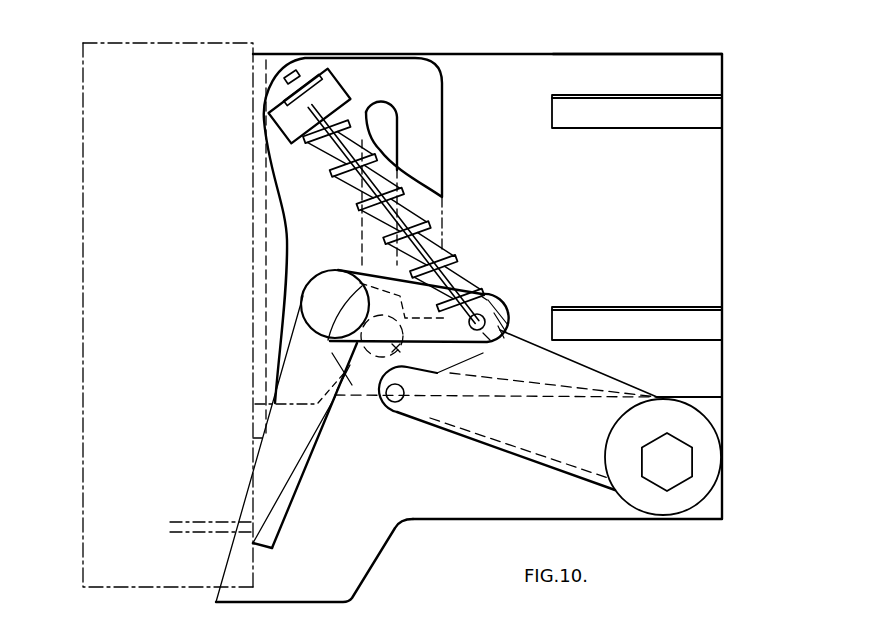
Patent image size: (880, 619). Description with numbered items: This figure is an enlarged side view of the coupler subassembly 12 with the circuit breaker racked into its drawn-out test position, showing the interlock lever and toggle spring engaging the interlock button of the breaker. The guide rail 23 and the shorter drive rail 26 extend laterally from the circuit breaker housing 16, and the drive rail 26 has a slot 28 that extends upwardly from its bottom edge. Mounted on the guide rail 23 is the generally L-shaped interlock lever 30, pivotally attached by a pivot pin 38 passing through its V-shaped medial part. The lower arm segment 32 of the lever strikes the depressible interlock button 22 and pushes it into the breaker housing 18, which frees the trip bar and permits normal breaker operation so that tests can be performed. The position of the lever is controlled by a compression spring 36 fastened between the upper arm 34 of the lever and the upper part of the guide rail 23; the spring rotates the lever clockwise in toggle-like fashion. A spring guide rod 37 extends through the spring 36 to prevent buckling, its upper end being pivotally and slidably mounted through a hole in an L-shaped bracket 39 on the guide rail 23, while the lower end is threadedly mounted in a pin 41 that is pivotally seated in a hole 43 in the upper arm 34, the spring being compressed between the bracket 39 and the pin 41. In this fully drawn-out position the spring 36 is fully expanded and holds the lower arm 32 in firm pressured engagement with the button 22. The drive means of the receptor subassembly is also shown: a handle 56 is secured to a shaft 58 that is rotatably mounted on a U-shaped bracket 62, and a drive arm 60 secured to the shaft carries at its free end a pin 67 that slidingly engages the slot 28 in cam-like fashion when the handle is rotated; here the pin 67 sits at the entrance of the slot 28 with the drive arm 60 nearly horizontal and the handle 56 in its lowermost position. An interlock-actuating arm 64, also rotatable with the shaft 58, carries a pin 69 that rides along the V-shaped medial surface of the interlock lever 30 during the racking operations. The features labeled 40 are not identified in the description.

The coupler subassembly 12 is at (500, 52).
The circuit breaker housing 16 is at (83, 186).
The breaker housing 18 is at (210, 58).
The interlock button 22 is at (212, 522).
The guide rail 23 is at (597, 80).
The drive rail 26 is at (403, 78).
The slot 28 is at (383, 118).
The interlock lever 30 is at (310, 464).
The lower arm segment 32 is at (285, 522).
The upper arm 34 is at (492, 307).
The compression spring 36 is at (357, 202).
The spring guide rod 37 is at (433, 250).
The pivot pin 38 is at (330, 282).
The L-shaped bracket 39 is at (335, 95).
The slots 40 is at (708, 100).
The pin 41 is at (500, 312).
The hole 43 is at (500, 323).
The handle 56 is at (447, 503).
The shaft 58 is at (680, 460).
The drive arm 60 is at (545, 433).
The U-shaped bracket 62 is at (703, 418).
The interlock-actuating arm 64 is at (405, 417).
The pin 67 is at (402, 355).
The pin 69 is at (398, 405).